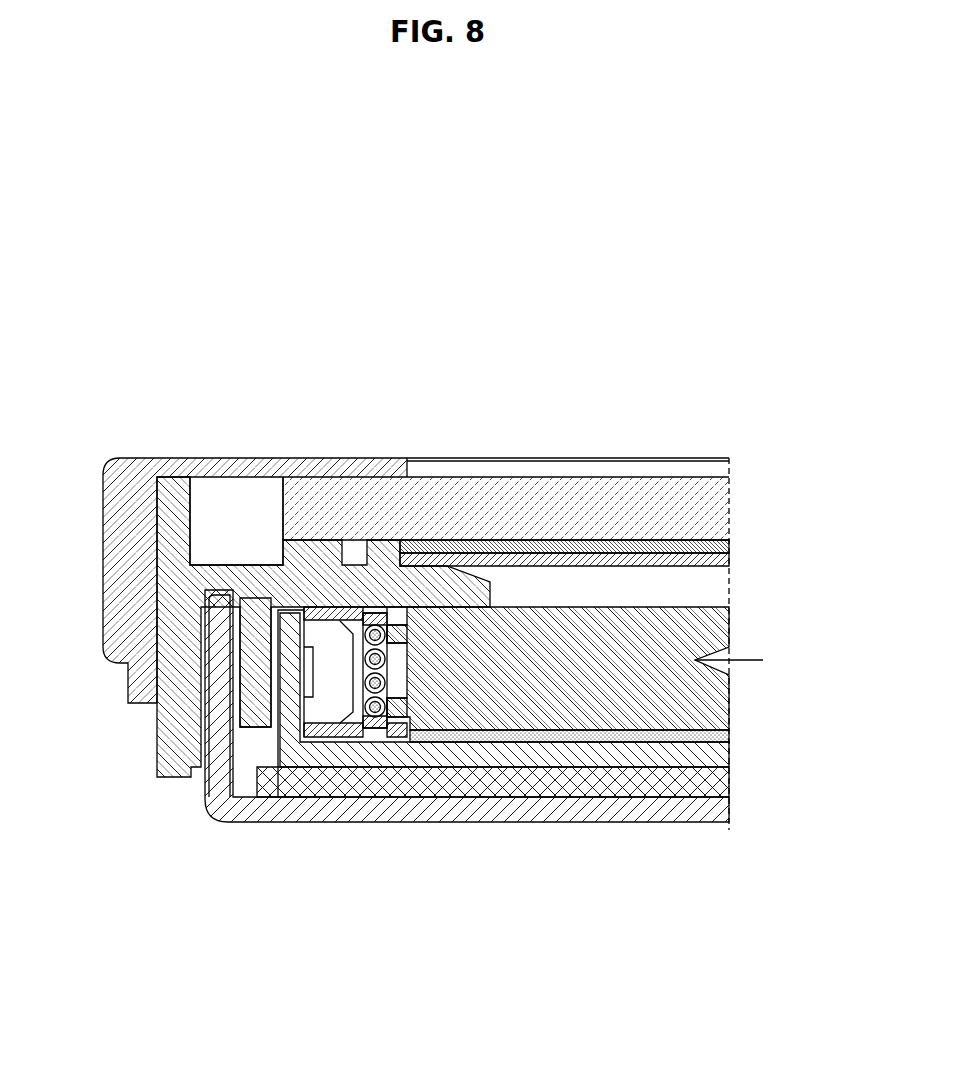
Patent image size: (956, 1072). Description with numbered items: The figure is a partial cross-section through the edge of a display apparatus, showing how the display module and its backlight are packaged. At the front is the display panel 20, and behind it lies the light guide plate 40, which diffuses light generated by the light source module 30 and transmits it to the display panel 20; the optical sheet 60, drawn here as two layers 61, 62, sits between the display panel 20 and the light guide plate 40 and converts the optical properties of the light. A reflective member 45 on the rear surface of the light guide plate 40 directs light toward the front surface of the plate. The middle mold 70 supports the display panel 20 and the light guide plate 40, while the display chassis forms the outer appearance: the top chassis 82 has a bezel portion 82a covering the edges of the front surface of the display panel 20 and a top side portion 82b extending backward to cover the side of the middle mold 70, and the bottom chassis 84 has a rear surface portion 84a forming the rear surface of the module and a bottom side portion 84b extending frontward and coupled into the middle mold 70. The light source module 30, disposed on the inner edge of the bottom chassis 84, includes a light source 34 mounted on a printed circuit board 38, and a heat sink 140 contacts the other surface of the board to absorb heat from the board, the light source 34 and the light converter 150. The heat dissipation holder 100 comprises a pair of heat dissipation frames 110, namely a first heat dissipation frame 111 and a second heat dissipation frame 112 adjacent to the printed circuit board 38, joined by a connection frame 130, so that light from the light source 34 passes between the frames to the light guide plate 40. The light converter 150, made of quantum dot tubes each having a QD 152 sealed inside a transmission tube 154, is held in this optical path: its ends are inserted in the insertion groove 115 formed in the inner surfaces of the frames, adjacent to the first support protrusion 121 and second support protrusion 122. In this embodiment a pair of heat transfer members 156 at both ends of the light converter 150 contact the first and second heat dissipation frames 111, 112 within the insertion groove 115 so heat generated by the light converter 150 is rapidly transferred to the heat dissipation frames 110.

The display panel 20 is at (607, 492).
The light source module 30 is at (484, 758).
The light source 34 is at (318, 684).
The printed circuit board 38 is at (312, 733).
The light guide plate 40 is at (717, 627).
The reflective member 45 is at (720, 735).
The optical sheet 60 is at (619, 546).
The first layer 61 is at (593, 564).
The second layer 62 is at (730, 545).
The middle mold 70 is at (178, 632).
The top chassis 82 is at (383, 539).
The bezel portion 82a is at (245, 457).
The top side portion 82b is at (103, 535).
The bottom chassis 84 is at (383, 742).
The rear surface portion 84a is at (545, 825).
The bottom side portion 84b is at (215, 742).
The heat dissipation holder 100 is at (271, 647).
The heat dissipation frames 110 is at (336, 647).
The first heat dissipation frame 111 is at (323, 610).
The second heat dissipation frame 112 is at (345, 732).
The insertion groove 115 is at (380, 722).
The first support protrusion 121 is at (402, 630).
The second support protrusion 122 is at (403, 710).
The connection frame 130 is at (355, 640).
The heat sink 140 is at (720, 783).
The light converter 150 is at (378, 657).
The quantum dot 152 is at (364, 626).
The transmission tube 154 is at (395, 627).
The heat transfer members 156 is at (376, 708).